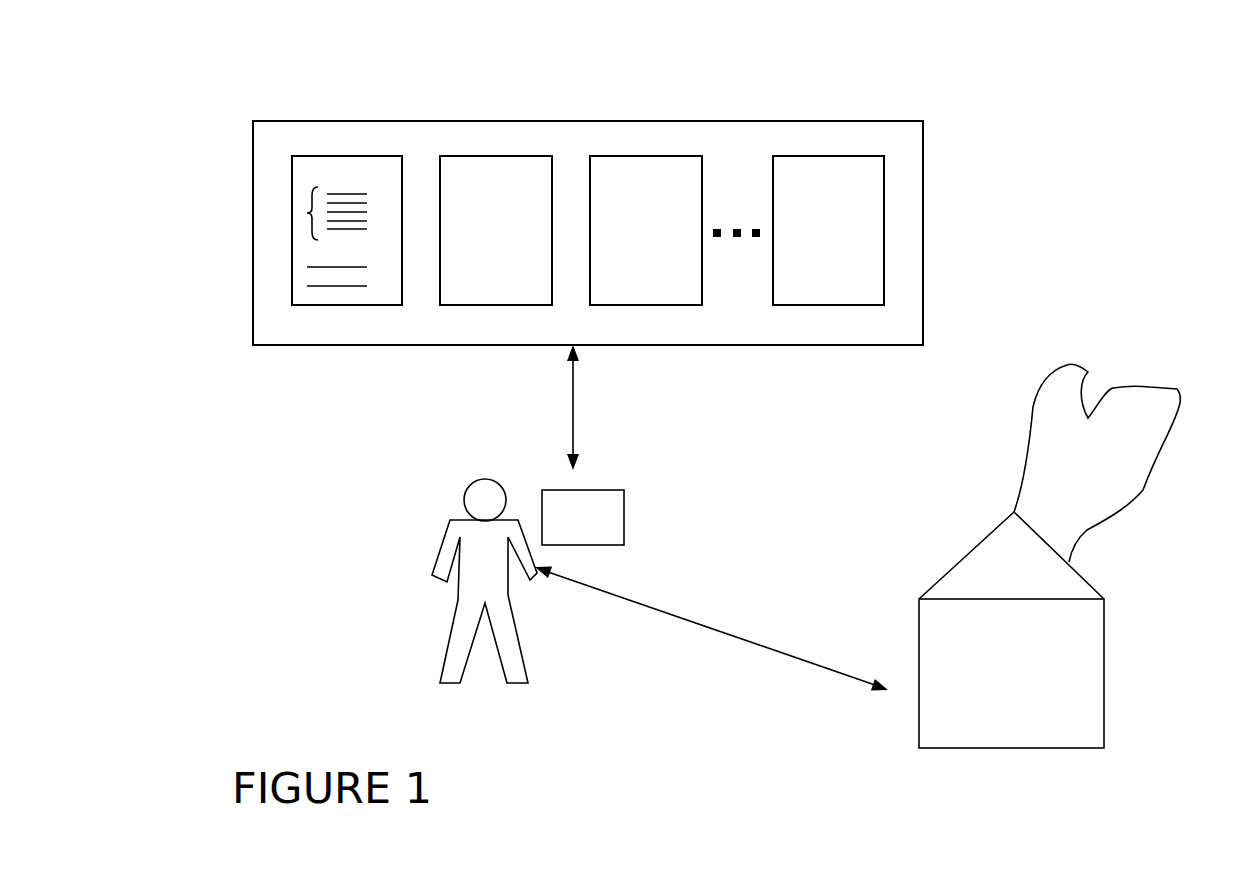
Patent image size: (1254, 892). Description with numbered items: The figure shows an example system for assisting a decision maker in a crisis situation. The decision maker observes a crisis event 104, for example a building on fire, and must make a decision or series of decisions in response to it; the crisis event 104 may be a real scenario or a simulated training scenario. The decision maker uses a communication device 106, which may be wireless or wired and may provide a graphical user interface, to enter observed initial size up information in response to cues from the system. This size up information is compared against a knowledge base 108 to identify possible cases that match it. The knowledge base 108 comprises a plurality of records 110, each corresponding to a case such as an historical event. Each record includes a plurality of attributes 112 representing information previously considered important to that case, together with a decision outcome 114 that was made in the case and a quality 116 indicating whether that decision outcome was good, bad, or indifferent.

The crisis event 104 is at (1049, 556).
The communication device 106 is at (583, 517).
The knowledge base 108 is at (397, 121).
The records 110 is at (322, 156).
The attributes 112 is at (307, 213).
The decision outcome 114 is at (310, 267).
The quality 116 is at (313, 286).